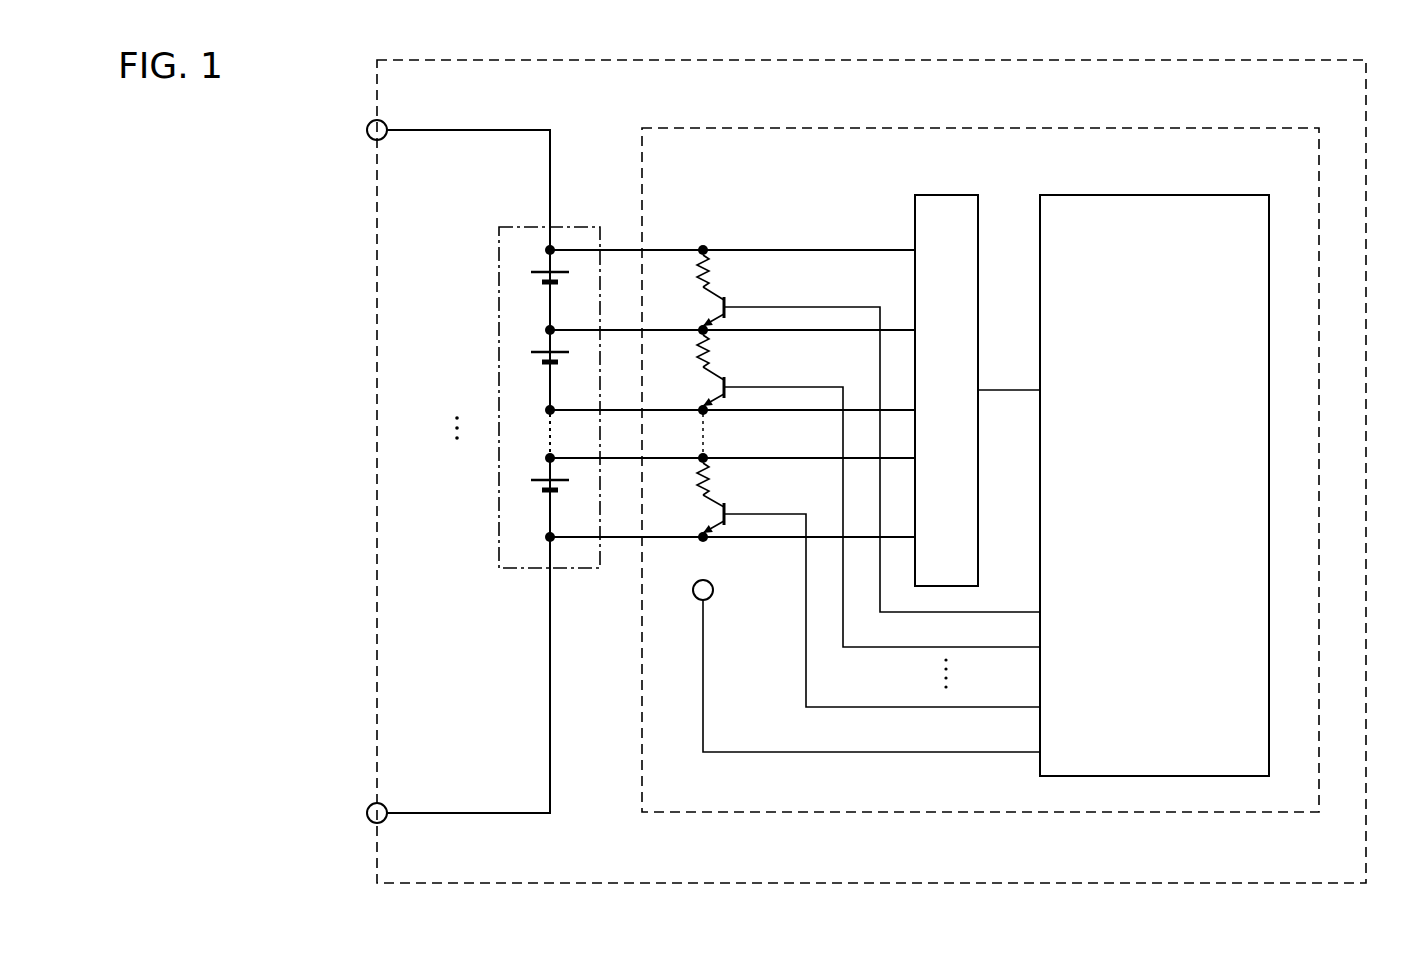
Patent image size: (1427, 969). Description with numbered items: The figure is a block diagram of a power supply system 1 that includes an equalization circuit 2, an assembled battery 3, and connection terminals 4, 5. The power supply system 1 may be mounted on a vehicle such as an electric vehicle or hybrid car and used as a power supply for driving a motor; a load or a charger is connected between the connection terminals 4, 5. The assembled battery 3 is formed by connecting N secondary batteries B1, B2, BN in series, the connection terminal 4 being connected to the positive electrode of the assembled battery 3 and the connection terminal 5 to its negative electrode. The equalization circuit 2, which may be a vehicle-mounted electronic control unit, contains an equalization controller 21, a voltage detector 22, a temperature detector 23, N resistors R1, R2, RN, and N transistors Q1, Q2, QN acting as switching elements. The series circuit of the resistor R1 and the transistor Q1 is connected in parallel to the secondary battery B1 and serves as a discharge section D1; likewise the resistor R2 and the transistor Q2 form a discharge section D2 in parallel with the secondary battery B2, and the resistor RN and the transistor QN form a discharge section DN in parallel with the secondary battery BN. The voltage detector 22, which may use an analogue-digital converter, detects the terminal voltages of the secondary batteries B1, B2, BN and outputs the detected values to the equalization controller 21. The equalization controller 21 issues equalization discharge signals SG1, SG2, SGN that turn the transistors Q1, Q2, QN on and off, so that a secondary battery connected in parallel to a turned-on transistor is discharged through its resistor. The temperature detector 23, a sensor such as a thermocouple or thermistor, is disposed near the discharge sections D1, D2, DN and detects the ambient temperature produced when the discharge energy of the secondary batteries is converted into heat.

The power supply system 1 is at (1368, 82).
The equalization circuit 2 is at (1068, 128).
The assembled battery 3 is at (499, 240).
The connection terminal 4 is at (366, 130).
The connection terminal 5 is at (366, 813).
The equalization controller 21 is at (1168, 195).
The voltage detector 22 is at (948, 195).
The temperature detector 23 is at (713, 594).
The secondary battery B1 is at (540, 282).
The secondary battery B2 is at (540, 362).
The secondary battery BN is at (540, 490).
The resistor R1 is at (716, 271).
The resistor R2 is at (716, 351).
The resistor RN is at (717, 479).
The transistor Q1 is at (797, 283).
The transistor Q2 is at (797, 363).
The transistor QN is at (797, 490).
The discharge section D1 is at (856, 433).
The discharge section D2 is at (856, 491).
The discharge section DN is at (855, 585).
The equalization discharge signal SG1 is at (1006, 599).
The equalization discharge signal SG2 is at (1006, 635).
The equalization discharge signal SGN is at (1005, 695).